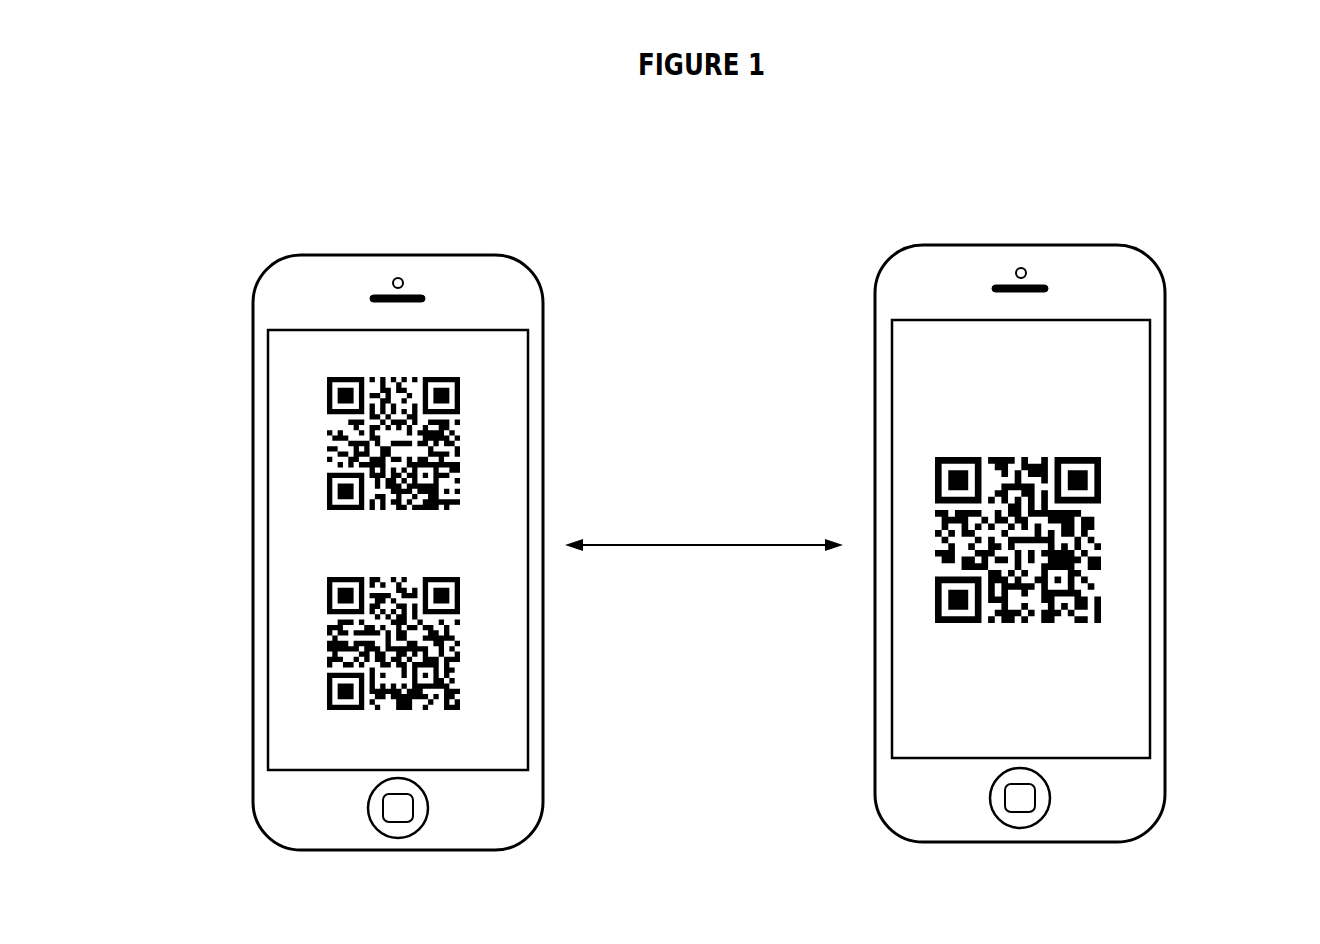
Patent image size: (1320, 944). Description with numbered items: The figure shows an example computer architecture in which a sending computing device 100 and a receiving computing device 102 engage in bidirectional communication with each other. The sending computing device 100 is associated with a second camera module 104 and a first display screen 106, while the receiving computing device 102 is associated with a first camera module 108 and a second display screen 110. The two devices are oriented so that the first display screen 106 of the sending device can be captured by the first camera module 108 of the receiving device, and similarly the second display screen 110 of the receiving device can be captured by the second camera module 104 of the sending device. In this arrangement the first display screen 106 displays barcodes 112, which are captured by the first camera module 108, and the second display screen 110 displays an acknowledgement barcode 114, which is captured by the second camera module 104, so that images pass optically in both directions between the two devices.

The sending computing device 100 is at (451, 479).
The receiving computing device 102 is at (945, 475).
The second camera module 104 is at (392, 280).
The first display screen 106 is at (270, 547).
The first camera module 108 is at (1027, 270).
The second display screen 110 is at (1152, 538).
The barcodes 112 is at (485, 643).
The acknowledgement barcode 114 is at (854, 563).